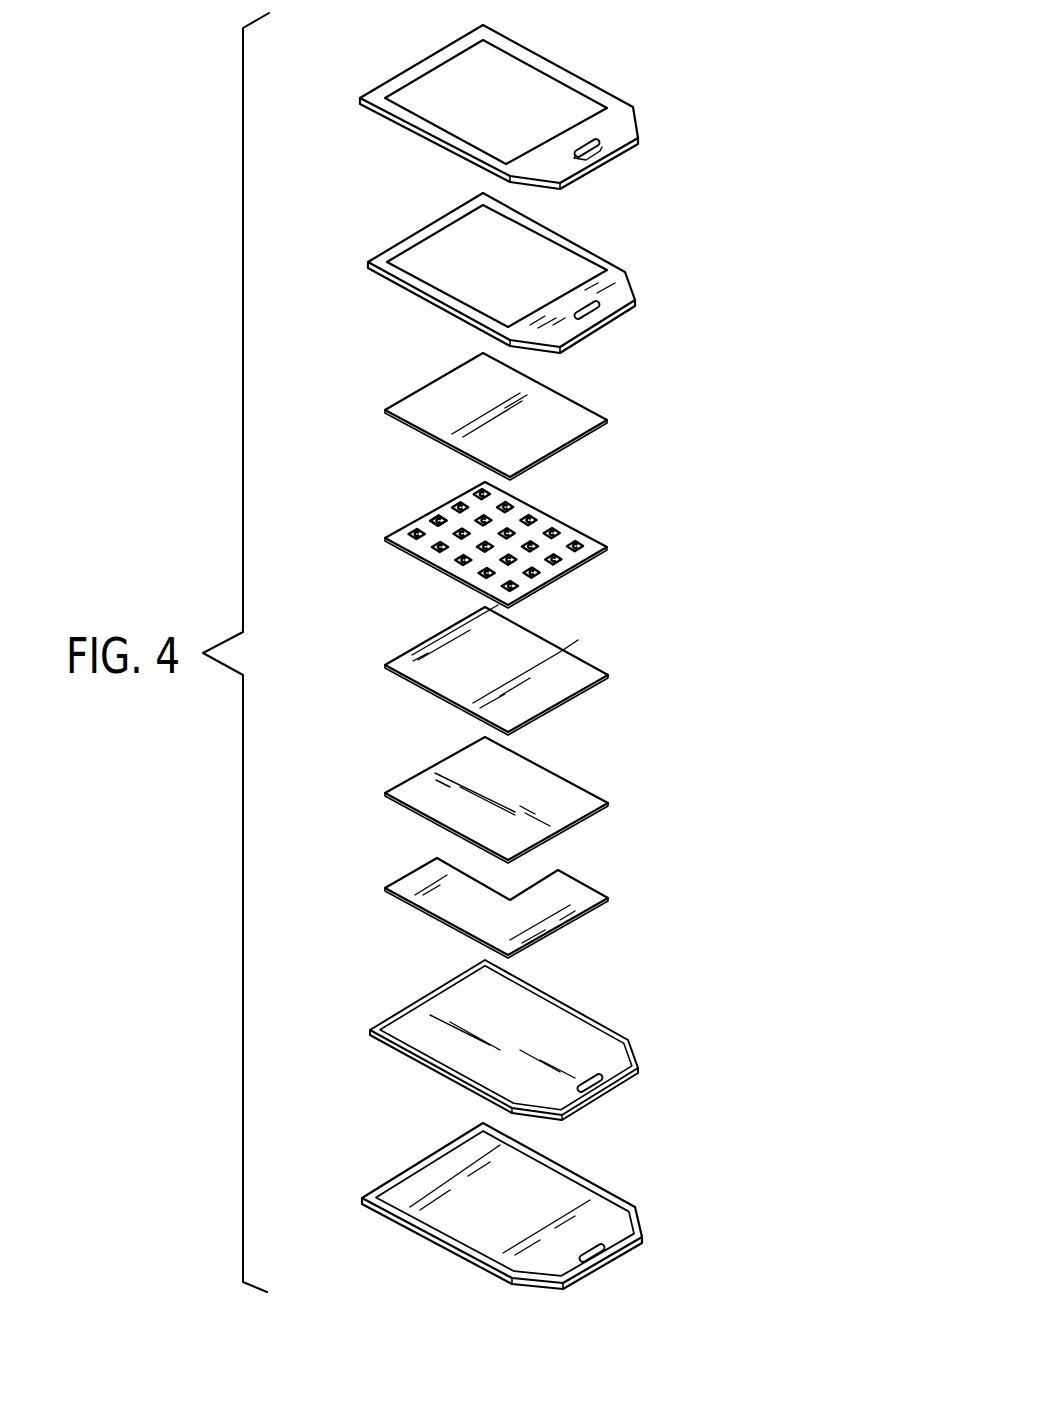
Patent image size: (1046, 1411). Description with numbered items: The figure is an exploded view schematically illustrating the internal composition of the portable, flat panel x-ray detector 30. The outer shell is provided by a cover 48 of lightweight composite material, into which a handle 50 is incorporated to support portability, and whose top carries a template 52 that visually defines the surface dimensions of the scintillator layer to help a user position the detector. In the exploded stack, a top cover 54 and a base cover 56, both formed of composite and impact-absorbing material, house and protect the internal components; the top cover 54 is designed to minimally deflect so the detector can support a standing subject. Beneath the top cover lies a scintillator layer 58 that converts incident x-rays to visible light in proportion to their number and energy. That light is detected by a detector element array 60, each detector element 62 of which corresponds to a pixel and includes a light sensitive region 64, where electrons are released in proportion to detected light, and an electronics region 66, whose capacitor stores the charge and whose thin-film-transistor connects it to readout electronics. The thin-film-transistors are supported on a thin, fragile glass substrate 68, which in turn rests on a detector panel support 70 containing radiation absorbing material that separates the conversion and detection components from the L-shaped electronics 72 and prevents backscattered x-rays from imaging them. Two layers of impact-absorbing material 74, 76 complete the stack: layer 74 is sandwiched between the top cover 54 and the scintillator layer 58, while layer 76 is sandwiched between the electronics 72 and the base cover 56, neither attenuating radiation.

The x-ray detector 30 is at (739, 134).
The cover 48 is at (524, 105).
The handle 50 is at (594, 147).
The template 52 is at (525, 89).
The top cover 54 is at (390, 82).
The base cover 56 is at (603, 1248).
The scintillator layer 58 is at (417, 397).
The detector element array 60 is at (453, 524).
The detector element 62 is at (445, 518).
The light sensitive region 64 is at (462, 507).
The electronics region 66 is at (440, 513).
The glass substrate 68 is at (422, 643).
The detector panel support 70 is at (425, 767).
The electronics 72 is at (398, 878).
The impact-absorbing layer 74 is at (613, 280).
The impact-absorbing layer 76 is at (580, 1030).